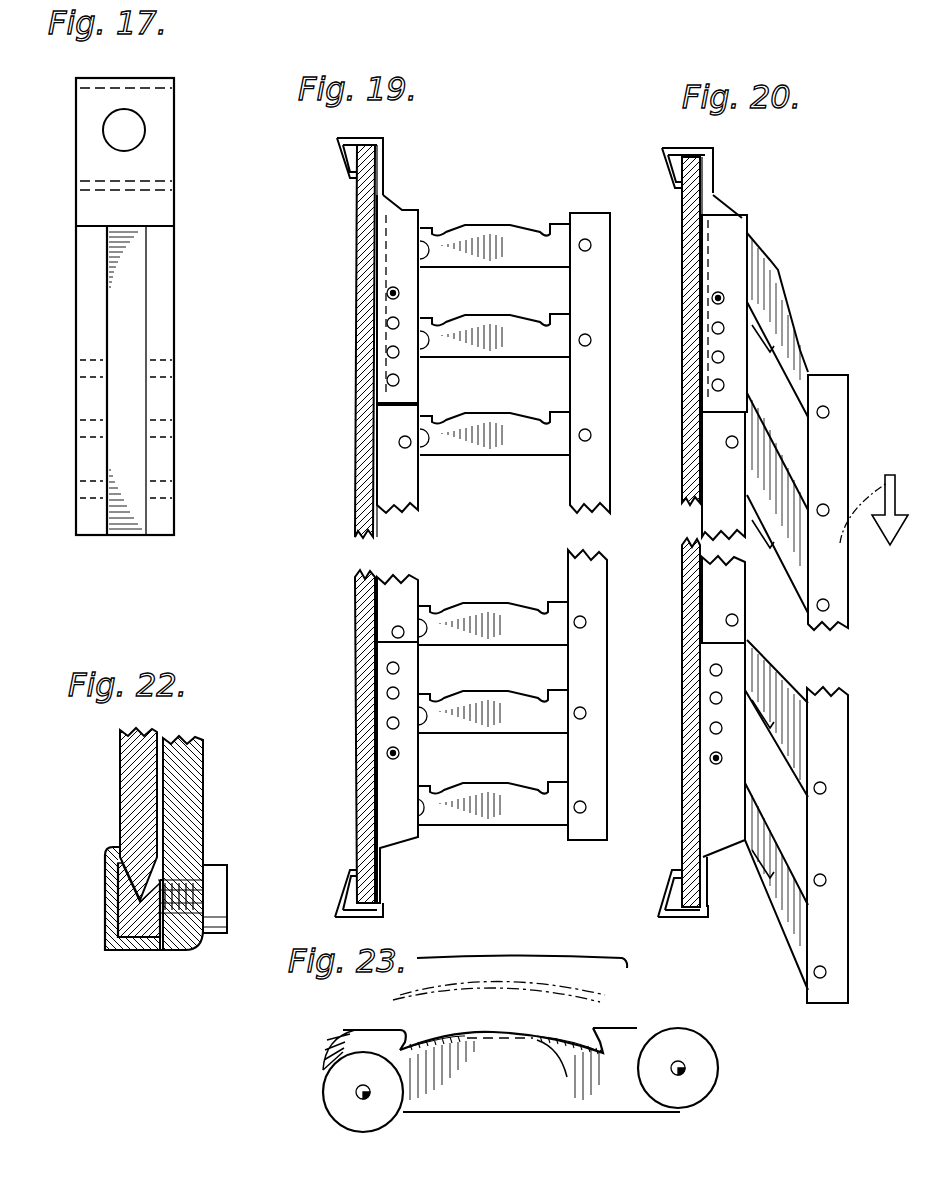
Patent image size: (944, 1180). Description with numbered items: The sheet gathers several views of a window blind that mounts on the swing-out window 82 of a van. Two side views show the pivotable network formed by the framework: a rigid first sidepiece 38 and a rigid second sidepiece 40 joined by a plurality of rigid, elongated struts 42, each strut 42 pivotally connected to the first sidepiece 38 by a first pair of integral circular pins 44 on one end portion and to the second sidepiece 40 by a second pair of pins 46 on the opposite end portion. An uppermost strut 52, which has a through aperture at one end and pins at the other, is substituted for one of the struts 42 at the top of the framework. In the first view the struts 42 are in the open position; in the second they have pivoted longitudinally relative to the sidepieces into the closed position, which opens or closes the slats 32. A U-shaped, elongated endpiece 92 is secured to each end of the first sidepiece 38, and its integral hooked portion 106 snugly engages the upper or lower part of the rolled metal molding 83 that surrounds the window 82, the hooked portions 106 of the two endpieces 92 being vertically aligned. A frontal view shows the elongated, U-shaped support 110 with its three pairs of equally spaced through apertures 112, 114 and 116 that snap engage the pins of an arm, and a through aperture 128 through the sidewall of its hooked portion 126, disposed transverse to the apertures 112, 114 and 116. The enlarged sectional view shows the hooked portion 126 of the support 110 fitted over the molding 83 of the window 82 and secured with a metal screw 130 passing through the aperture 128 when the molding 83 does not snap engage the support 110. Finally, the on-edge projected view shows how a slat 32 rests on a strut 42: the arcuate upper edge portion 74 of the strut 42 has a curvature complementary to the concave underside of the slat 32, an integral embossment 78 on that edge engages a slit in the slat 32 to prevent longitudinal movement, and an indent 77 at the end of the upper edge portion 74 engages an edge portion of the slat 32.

In FIG. 17, the elongated support 110 is at (90, 108).
In FIG. 22, the elongated support 110 is at (192, 800).
In FIG. 17, the through aperture 128 is at (130, 127).
In FIG. 17, the through aperture 112 is at (176, 372).
In FIG. 17, the through aperture 114 is at (176, 432).
In FIG. 17, the through aperture 116 is at (176, 492).
In FIG. 19, the window 82 is at (366, 600).
In FIG. 20, the window 82 is at (692, 615).
In FIG. 22, the window 82 is at (128, 765).
In FIG. 19, the hooked portion 106 is at (337, 136).
In FIG. 20, the hooked portion 106 is at (664, 146).
In FIG. 19, the molding 83 is at (380, 150).
In FIG. 20, the molding 83 is at (700, 170).
In FIG. 22, the molding 83 is at (137, 912).
In FIG. 19, the endpiece 92 is at (393, 225).
In FIG. 20, the endpiece 92 is at (722, 228).
In FIG. 19, the first sidepiece 38 is at (418, 470).
In FIG. 20, the first sidepiece 38 is at (720, 503).
In FIG. 19, the pins 44 is at (410, 448).
In FIG. 20, the pins 44 is at (726, 444).
In FIG. 23, the pins 44 is at (360, 1093).
In FIG. 19, the struts 42 is at (500, 440).
In FIG. 20, the struts 42 is at (790, 550).
In FIG. 23, the struts 42 is at (645, 1032).
In FIG. 19, the uppermost strut 52 is at (492, 228).
In FIG. 20, the uppermost strut 52 is at (785, 310).
In FIG. 19, the second sidepiece 40 is at (598, 505).
In FIG. 20, the second sidepiece 40 is at (848, 622).
In FIG. 19, the pins 46 is at (583, 442).
In FIG. 20, the pins 46 is at (830, 606).
In FIG. 23, the pins 46 is at (683, 1063).
In FIG. 22, the hooked portion 126 is at (108, 878).
In FIG. 22, the metal screw 130 is at (214, 874).
In FIG. 23, the embossment 78 is at (510, 1010).
In FIG. 23, the slat 32 is at (398, 996).
In FIG. 23, the upper edge portion 74 is at (567, 1077).
In FIG. 23, the indent 77 is at (612, 1072).